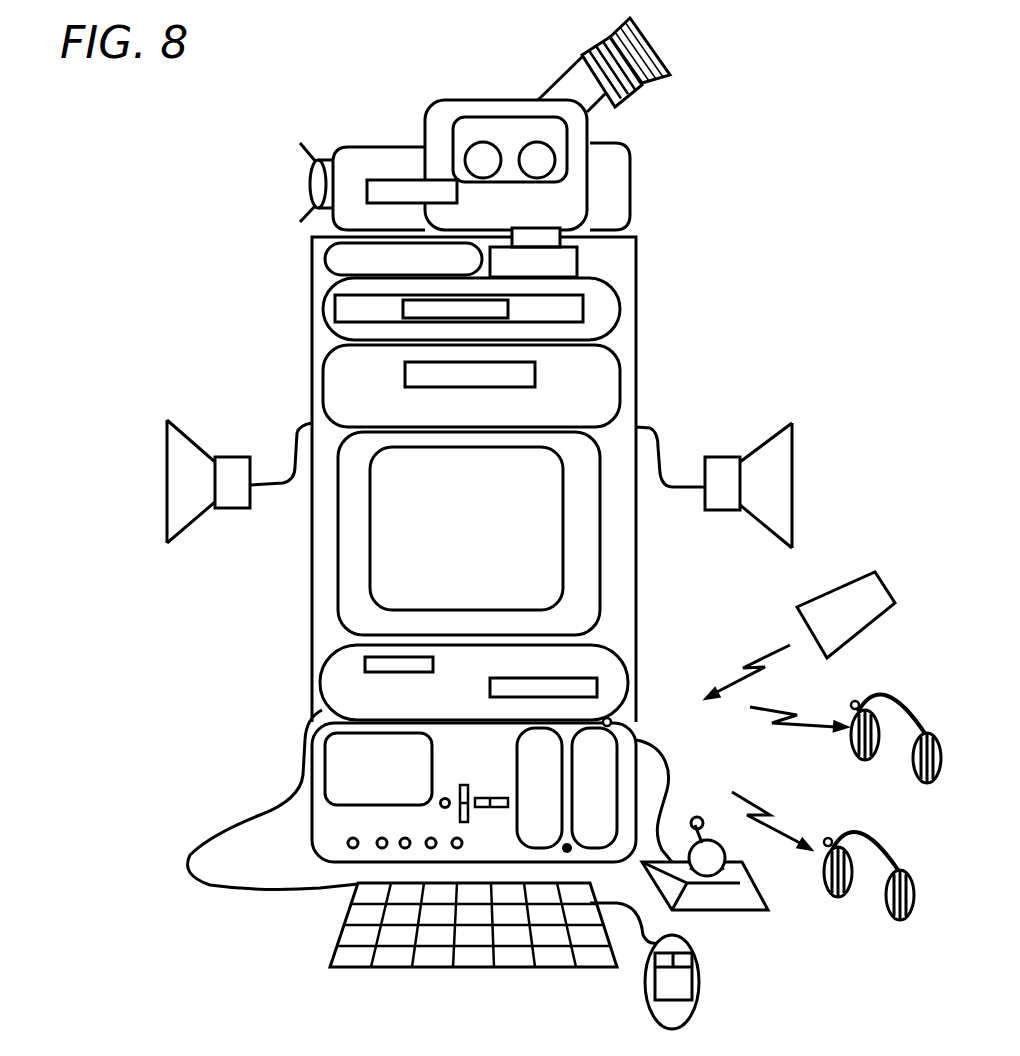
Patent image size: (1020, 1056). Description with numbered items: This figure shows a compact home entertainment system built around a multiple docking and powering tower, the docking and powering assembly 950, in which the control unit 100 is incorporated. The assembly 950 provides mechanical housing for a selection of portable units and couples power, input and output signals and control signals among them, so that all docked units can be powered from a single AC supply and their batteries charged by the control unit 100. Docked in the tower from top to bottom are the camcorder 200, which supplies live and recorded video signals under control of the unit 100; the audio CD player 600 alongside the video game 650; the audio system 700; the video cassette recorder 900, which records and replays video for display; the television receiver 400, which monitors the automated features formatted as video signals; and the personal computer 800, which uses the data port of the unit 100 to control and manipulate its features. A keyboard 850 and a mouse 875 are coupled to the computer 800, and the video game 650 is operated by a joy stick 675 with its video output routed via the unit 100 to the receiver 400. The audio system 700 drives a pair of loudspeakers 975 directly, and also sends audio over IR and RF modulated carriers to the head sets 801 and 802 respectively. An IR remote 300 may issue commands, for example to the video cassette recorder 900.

The control unit 100 is at (307, 772).
The camcorder 200 is at (303, 167).
The IR remote 300 is at (805, 594).
The television receiver 400 is at (303, 587).
The audio CD player 600 is at (303, 253).
The video game 650 is at (577, 257).
The joy stick 675 is at (702, 844).
The audio system 700 is at (303, 307).
The personal computer 800 is at (307, 670).
The head set 801 is at (889, 747).
The head set 802 is at (869, 888).
The keyboard 850 is at (347, 923).
The mouse 875 is at (674, 966).
The video cassette recorder 900 is at (303, 380).
The multiple docking and powering assembly 950 is at (645, 330).
The loudspeakers 975 is at (252, 448).